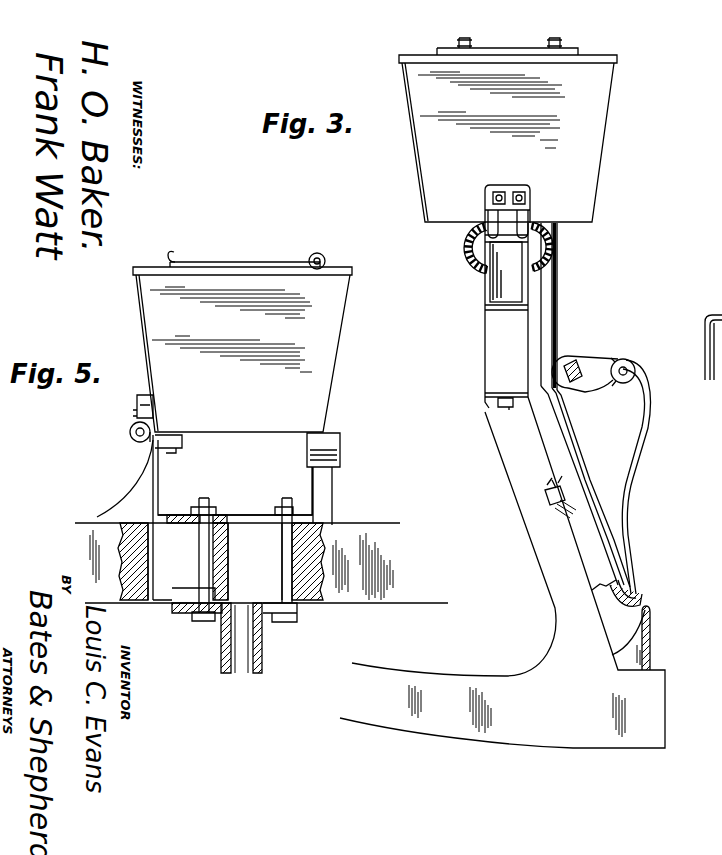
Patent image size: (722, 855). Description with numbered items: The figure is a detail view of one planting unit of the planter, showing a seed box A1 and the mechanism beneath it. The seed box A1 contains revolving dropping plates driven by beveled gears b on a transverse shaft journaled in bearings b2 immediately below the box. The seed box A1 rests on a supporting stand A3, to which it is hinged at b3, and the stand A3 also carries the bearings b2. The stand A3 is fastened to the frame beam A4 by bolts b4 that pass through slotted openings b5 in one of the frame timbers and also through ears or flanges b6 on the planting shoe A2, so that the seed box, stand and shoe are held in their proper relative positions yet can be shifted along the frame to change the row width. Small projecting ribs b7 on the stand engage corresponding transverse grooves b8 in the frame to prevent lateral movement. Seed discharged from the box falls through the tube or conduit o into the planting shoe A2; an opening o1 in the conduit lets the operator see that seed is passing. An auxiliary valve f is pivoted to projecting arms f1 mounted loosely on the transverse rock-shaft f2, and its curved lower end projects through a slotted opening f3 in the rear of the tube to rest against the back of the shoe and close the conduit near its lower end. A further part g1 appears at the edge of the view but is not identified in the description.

In FIG. 3, the seed box A1 is at (508, 130).
In FIG. 5, the seed box A1 is at (242, 341).
In FIG. 3, the planting shoe A2 is at (502, 572).
In FIG. 3, the supporting stand A3 is at (496, 283).
In FIG. 5, the supporting stand A3 is at (214, 544).
In FIG. 3, the frame beam A4 is at (506, 315).
In FIG. 5, the frame beam A4 is at (261, 559).
In FIG. 3, the beveled gears b is at (556, 237).
In FIG. 5, the bearings b2 is at (322, 440).
In FIG. 3, the hinge b3 is at (466, 245).
In FIG. 5, the hinge b3 is at (130, 431).
In FIG. 3, the bolts b4 is at (502, 402).
In FIG. 5, the bolts b4 is at (203, 613).
In FIG. 5, the slotted openings b5 is at (168, 590).
In FIG. 5, the ears or flanges b6 is at (164, 513).
In FIG. 5, the projecting ribs b7 is at (264, 522).
In FIG. 5, the transverse grooves b8 is at (247, 528).
In FIG. 3, the tube or conduit o is at (591, 496).
In FIG. 5, the tube or conduit o is at (241, 638).
In FIG. 3, the opening o1 is at (560, 302).
In FIG. 3, the auxiliary valve f is at (650, 421).
In FIG. 3, the projecting arms f1 is at (626, 358).
In FIG. 3, the transverse shaft f2 is at (576, 362).
In FIG. 3, the slotted openings f3 is at (651, 613).
In FIG. 3, the bracket g1 is at (706, 362).